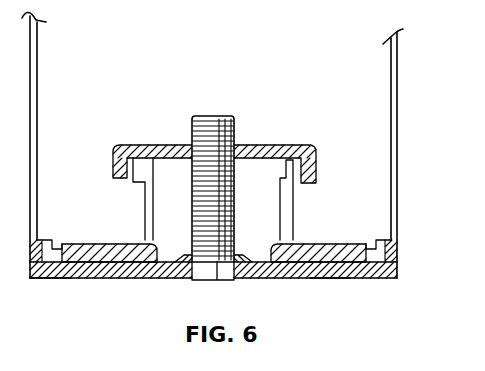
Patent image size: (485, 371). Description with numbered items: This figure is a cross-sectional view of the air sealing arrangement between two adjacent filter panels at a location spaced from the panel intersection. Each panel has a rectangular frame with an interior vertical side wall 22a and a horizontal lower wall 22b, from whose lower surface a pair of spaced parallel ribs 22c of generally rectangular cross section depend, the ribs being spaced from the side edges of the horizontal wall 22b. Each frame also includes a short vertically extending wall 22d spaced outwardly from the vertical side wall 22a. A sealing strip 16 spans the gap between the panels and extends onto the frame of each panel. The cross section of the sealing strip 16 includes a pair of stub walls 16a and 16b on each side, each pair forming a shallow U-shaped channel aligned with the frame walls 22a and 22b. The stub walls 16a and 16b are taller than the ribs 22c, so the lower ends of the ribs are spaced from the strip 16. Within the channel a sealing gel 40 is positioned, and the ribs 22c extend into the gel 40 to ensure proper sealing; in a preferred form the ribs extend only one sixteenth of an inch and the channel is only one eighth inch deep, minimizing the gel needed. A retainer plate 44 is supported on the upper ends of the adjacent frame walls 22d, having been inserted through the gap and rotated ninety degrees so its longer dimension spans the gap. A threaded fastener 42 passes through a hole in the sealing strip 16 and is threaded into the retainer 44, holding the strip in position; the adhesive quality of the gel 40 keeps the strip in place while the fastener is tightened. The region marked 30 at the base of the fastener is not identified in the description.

The interior vertical side wall 22a is at (40, 70).
The horizontal lower wall 22b is at (82, 243).
The ribs 22c is at (53, 241).
The short vertically extending wall 22d is at (133, 183).
The threaded fastener 42 is at (234, 128).
The retainer plate 44 is at (275, 145).
The sealing strip 16 is at (98, 279).
The stub wall 16a is at (30, 262).
The stub wall 16b is at (178, 263).
The sealing gel 40 is at (58, 279).
The threaded bore 30 is at (200, 281).